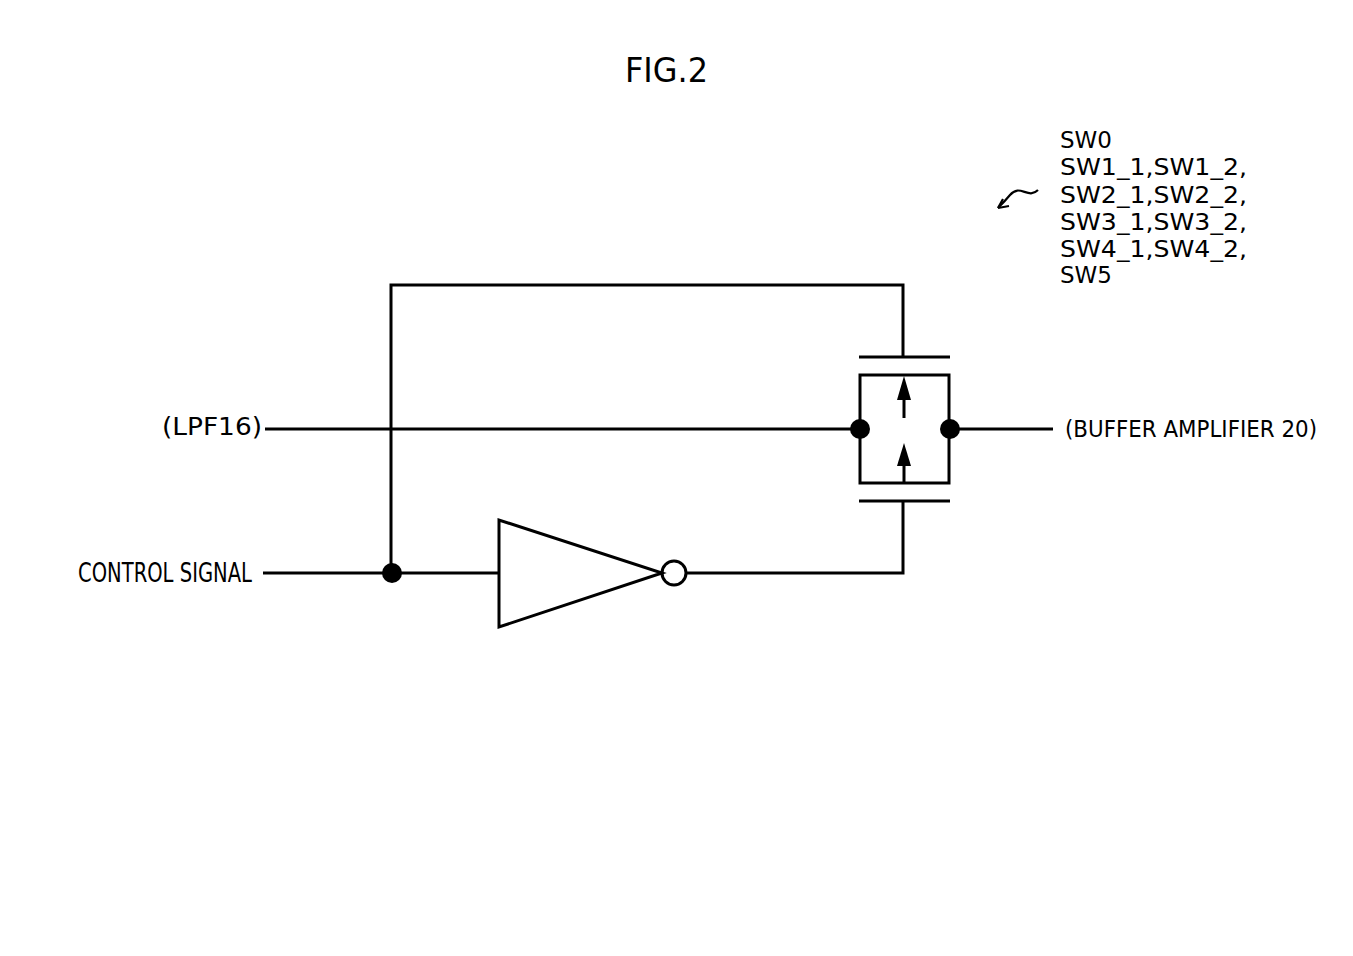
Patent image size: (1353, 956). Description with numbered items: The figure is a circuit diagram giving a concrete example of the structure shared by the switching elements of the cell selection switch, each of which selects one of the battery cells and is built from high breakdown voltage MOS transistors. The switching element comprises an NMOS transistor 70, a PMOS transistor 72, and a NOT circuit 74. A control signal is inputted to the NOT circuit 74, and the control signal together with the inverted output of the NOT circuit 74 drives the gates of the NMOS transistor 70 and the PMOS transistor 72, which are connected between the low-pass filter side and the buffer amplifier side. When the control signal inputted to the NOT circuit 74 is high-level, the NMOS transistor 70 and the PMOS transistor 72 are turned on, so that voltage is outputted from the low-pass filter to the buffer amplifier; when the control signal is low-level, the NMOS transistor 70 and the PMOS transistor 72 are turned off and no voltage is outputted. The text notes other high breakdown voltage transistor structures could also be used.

The NMOS transistor 70 is at (933, 350).
The PMOS transistor 72 is at (929, 508).
The NOT circuit 74 is at (565, 540).